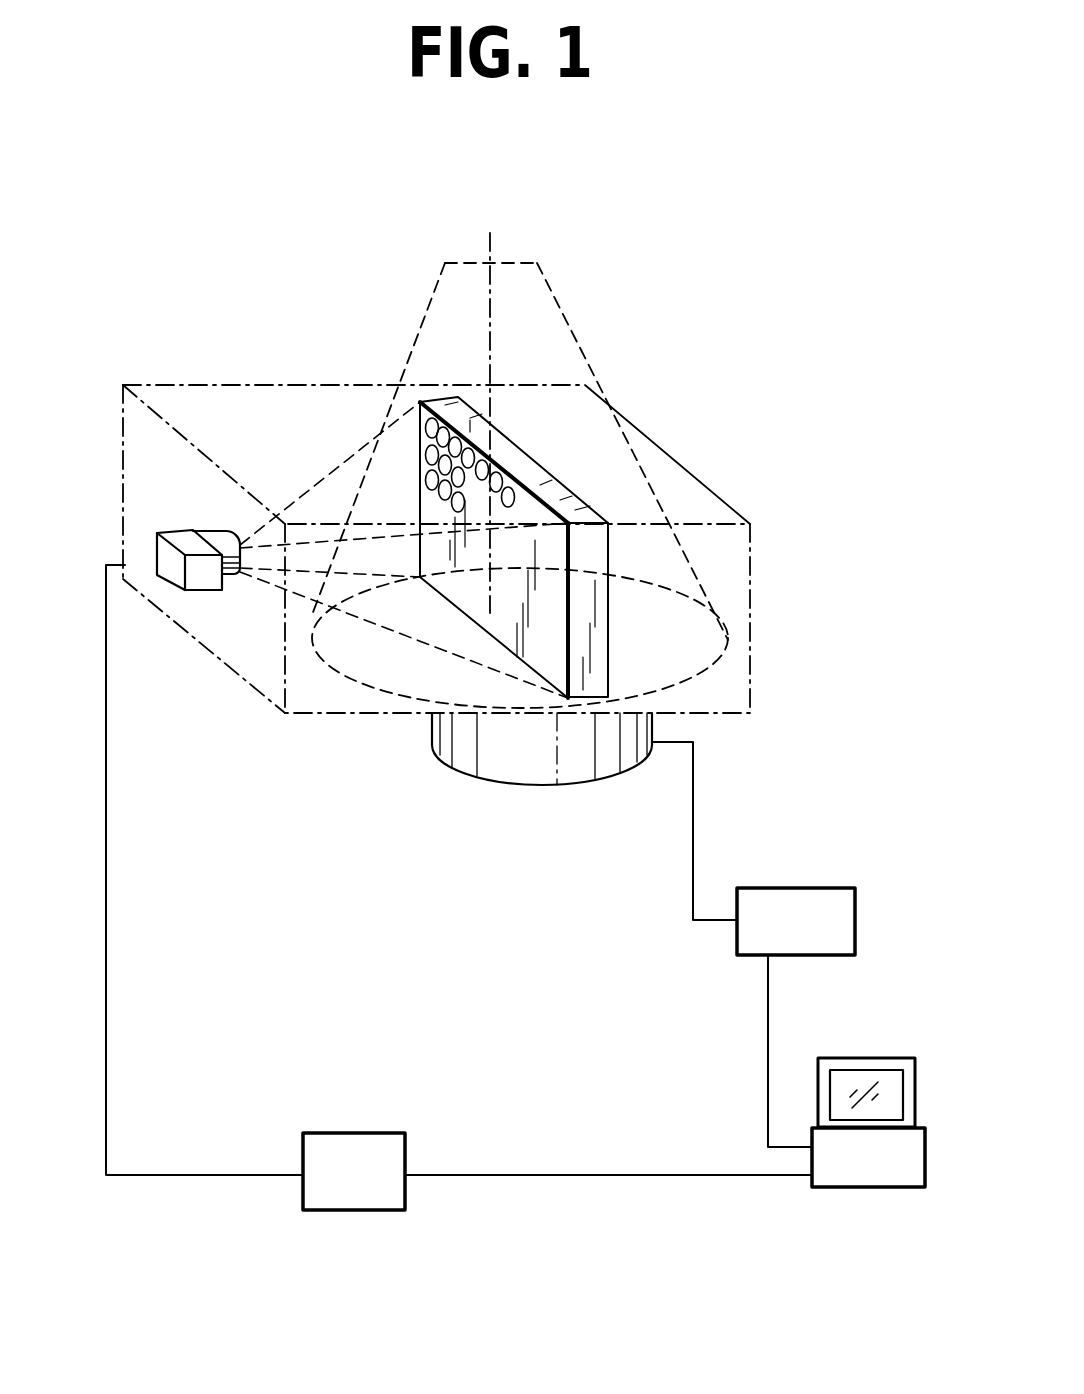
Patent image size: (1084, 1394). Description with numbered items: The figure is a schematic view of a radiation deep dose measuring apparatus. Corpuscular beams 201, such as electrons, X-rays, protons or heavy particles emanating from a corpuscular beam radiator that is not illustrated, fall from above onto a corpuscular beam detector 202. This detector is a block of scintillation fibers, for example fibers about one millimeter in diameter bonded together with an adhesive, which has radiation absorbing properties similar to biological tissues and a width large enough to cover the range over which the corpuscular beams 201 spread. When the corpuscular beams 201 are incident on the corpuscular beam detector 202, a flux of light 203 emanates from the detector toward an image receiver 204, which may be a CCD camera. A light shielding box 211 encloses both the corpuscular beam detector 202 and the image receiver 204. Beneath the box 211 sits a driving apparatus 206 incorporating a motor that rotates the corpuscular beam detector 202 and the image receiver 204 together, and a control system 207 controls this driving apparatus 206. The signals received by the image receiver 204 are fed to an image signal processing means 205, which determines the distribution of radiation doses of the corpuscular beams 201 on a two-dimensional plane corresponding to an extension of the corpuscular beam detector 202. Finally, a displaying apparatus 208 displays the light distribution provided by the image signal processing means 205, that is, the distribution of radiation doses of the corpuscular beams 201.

The corpuscular beams 201 is at (575, 333).
The corpuscular beam detector 202 is at (612, 623).
The flux of light 203 is at (310, 605).
The image receiver 204 is at (200, 592).
The image signal processing means 205 is at (343, 1210).
The driving apparatus 206 is at (543, 787).
The control system 207 is at (855, 918).
The displaying apparatus 208 is at (860, 1187).
The light shielding box 211 is at (683, 465).